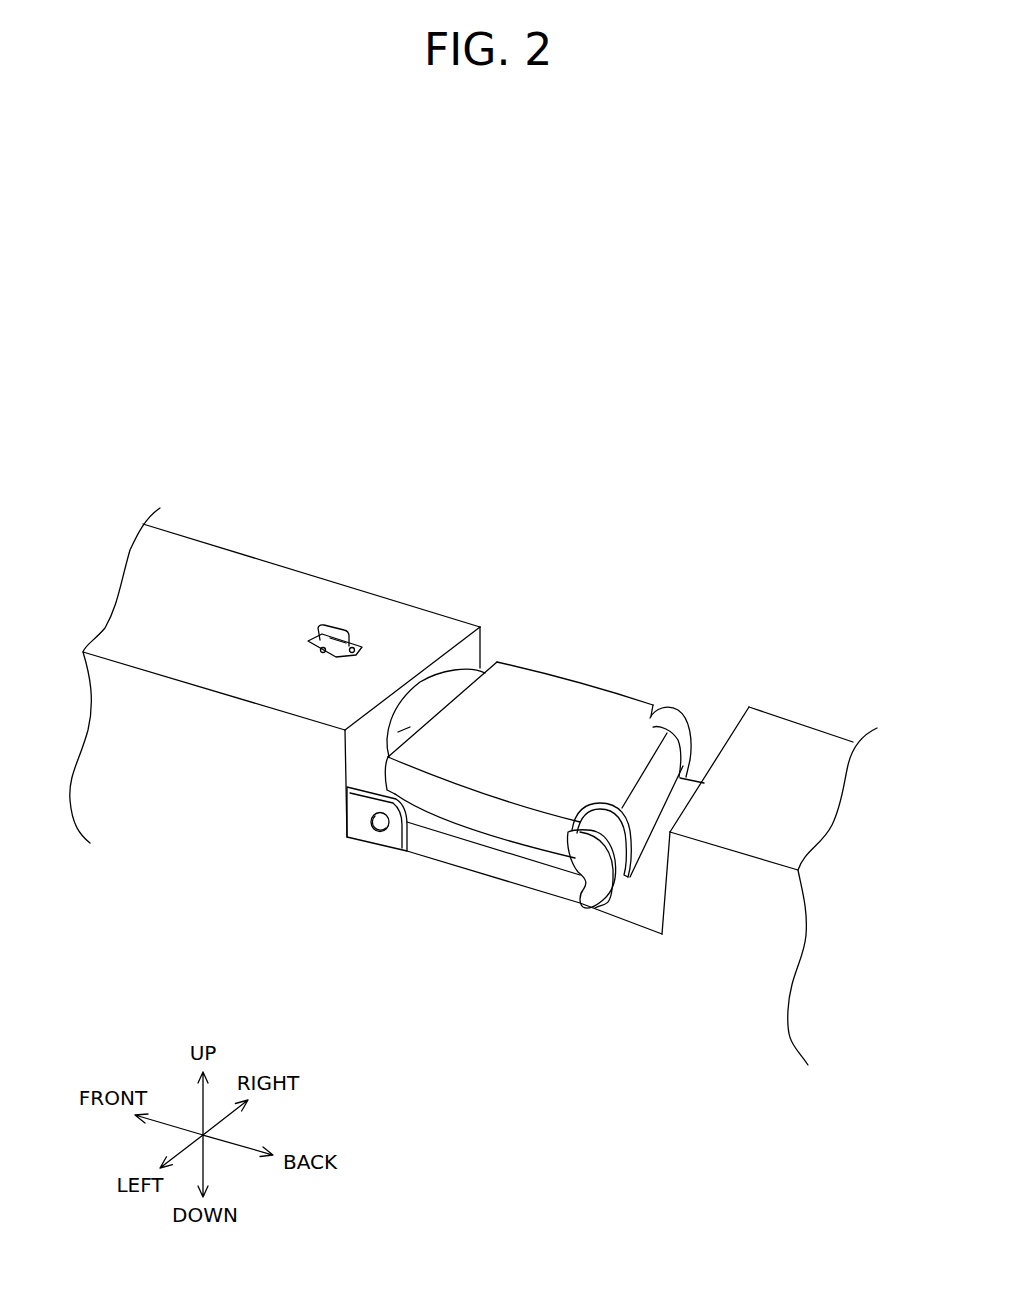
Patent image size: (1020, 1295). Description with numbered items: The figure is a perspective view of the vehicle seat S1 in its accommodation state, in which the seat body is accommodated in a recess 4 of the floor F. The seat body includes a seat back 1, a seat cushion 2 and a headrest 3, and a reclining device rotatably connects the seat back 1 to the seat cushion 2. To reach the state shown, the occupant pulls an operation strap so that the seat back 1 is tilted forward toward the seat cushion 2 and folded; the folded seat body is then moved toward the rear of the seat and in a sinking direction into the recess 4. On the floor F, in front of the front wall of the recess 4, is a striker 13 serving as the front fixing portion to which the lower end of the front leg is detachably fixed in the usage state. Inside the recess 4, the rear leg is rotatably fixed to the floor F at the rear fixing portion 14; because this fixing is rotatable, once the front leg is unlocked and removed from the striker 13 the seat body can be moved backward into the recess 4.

The floor F is at (236, 592).
The vehicle seat S1 is at (550, 790).
The seat back 1 is at (566, 697).
The seat cushion 2 is at (485, 862).
The headrest 3 is at (445, 698).
The recess 4 is at (725, 703).
The striker 13 is at (303, 647).
The rear fixing portion 14 is at (390, 837).